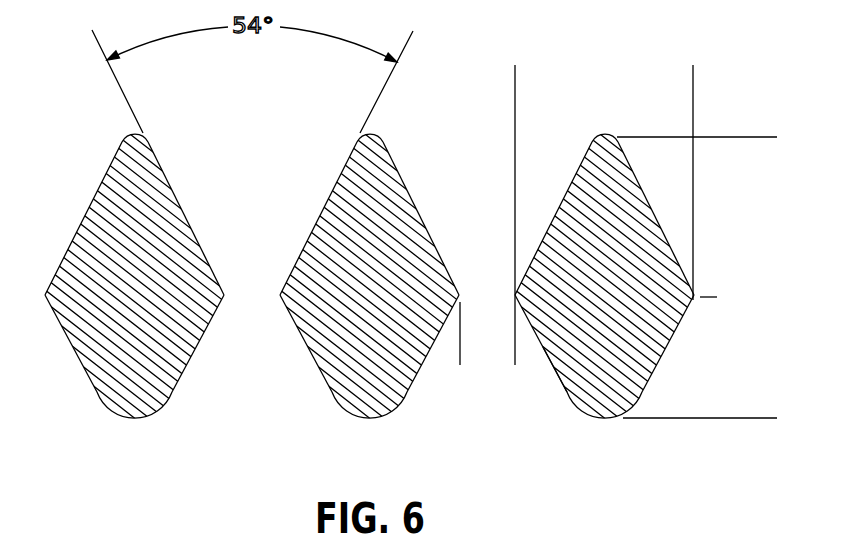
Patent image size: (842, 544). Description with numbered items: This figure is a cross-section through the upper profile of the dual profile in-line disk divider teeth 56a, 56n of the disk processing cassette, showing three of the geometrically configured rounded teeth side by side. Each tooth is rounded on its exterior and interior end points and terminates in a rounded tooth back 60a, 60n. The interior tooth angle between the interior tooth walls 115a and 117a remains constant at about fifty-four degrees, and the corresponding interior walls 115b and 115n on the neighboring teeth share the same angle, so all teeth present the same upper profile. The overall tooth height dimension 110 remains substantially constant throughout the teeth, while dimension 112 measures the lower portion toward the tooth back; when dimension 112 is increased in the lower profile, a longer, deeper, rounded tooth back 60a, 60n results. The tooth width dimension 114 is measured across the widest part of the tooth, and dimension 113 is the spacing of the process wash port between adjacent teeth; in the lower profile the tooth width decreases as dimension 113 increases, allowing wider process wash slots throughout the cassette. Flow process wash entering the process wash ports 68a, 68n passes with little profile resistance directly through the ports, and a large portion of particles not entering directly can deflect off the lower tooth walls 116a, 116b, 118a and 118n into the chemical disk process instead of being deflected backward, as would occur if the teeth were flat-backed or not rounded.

The process wash port 68a is at (243, 160).
The process wash port 68n is at (475, 158).
The interior tooth wall 115a is at (164, 173).
The interior tooth wall 115b is at (399, 173).
The interior tooth wall 115n is at (577, 177).
The tooth wall 116a is at (186, 366).
The tooth wall 116b is at (422, 365).
The interior tooth wall 117a is at (343, 178).
The tooth wall 118a is at (323, 377).
The tooth wall 118n is at (555, 377).
The rounded tooth 56a is at (88, 376).
The rounded tooth 56n is at (572, 402).
The rounded tooth back 60a is at (128, 420).
The rounded tooth back 60n is at (602, 420).
The dimension 110 is at (767, 418).
The dimension 112 is at (709, 418).
The dimension 113 is at (516, 360).
The tooth width dimension 114 is at (693, 75).